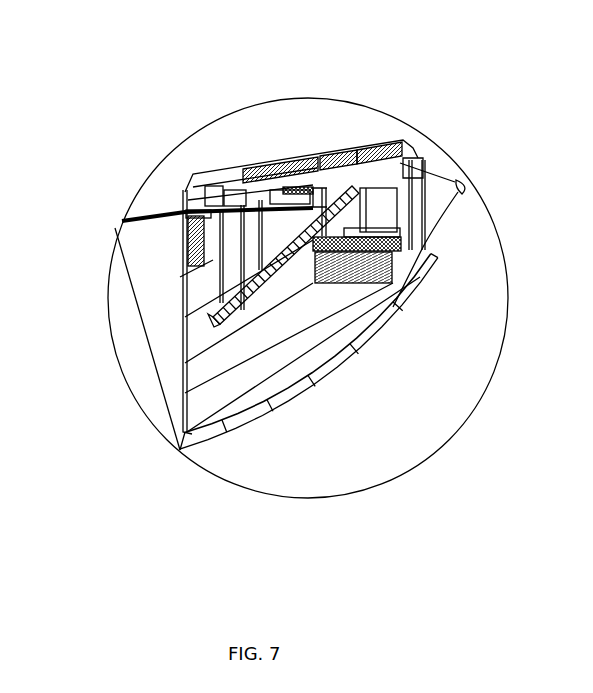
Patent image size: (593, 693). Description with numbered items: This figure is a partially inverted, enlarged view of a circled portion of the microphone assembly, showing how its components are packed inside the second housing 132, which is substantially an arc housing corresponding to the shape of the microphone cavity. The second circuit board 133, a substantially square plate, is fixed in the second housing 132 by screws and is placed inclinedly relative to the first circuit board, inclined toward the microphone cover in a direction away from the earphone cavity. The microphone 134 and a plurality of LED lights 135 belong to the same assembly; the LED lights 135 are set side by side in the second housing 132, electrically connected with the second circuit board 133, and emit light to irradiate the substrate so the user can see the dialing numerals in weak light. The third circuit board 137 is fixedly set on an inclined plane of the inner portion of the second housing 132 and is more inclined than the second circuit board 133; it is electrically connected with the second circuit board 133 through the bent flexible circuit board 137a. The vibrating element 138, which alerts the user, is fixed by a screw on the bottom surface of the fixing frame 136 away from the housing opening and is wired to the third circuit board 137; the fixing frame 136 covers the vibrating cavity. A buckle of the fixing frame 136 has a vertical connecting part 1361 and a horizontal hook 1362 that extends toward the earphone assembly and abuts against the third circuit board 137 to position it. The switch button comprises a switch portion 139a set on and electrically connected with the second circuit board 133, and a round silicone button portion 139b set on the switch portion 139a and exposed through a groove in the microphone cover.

The second housing 132 is at (355, 350).
The second circuit board 133 is at (185, 190).
The microphone 134 is at (388, 137).
The LED lights 135 is at (185, 248).
The fixing frame 136 is at (405, 250).
The vertical connecting part 1361 is at (367, 222).
The horizontal hook 1362 is at (405, 147).
The third circuit board 137 is at (172, 383).
The bent flexible circuit board 137a is at (160, 344).
The vibrating element 138 is at (400, 299).
The switch portion 139a is at (310, 150).
The button portion 139b is at (273, 152).